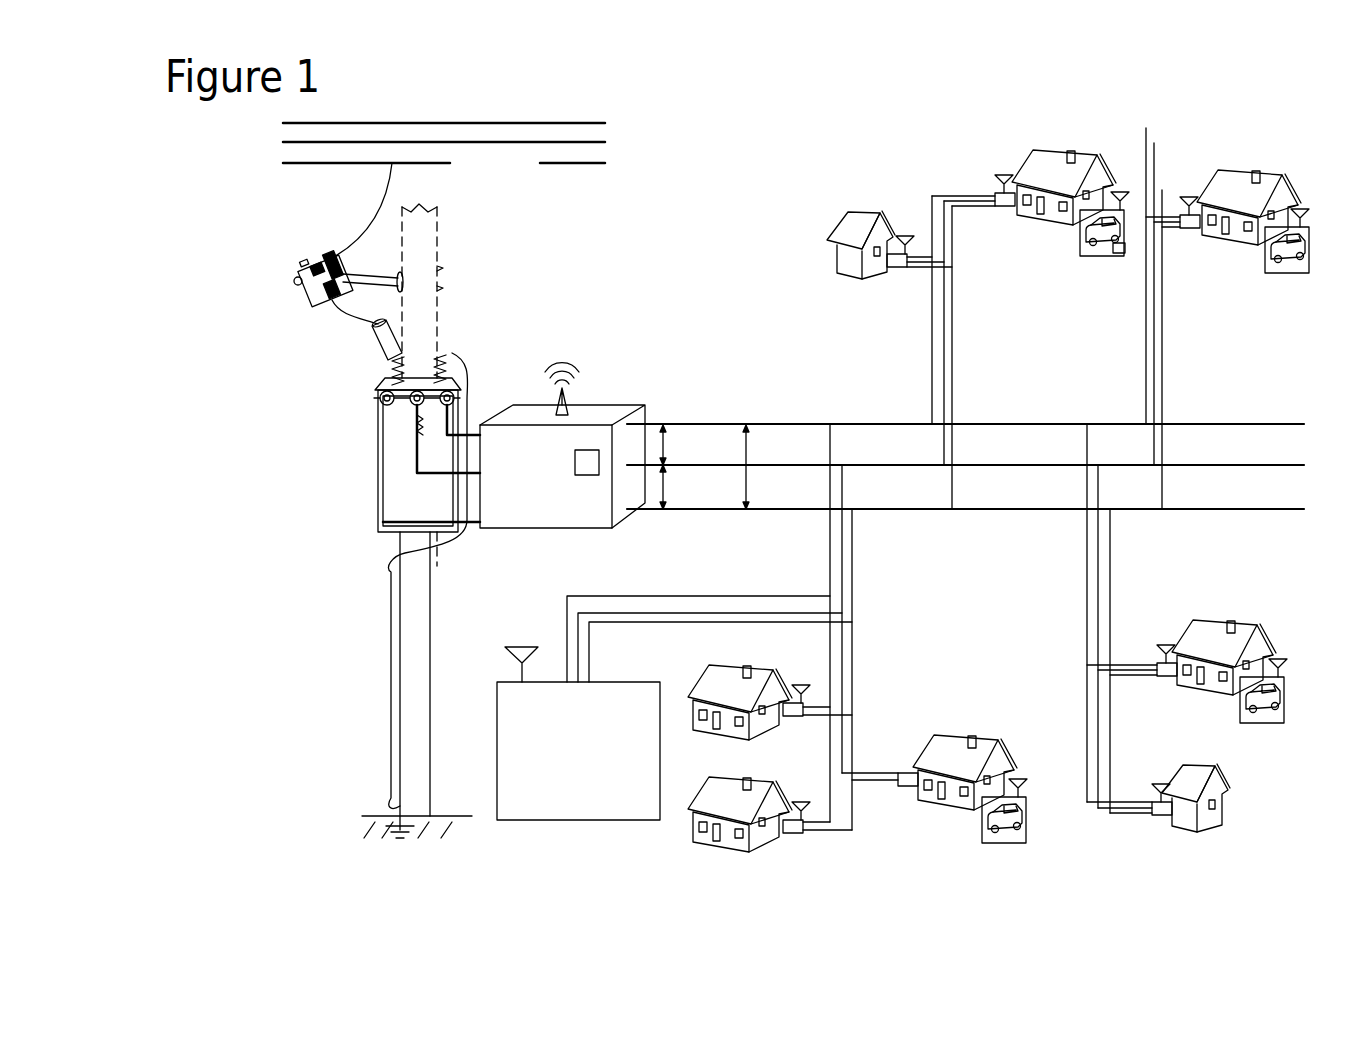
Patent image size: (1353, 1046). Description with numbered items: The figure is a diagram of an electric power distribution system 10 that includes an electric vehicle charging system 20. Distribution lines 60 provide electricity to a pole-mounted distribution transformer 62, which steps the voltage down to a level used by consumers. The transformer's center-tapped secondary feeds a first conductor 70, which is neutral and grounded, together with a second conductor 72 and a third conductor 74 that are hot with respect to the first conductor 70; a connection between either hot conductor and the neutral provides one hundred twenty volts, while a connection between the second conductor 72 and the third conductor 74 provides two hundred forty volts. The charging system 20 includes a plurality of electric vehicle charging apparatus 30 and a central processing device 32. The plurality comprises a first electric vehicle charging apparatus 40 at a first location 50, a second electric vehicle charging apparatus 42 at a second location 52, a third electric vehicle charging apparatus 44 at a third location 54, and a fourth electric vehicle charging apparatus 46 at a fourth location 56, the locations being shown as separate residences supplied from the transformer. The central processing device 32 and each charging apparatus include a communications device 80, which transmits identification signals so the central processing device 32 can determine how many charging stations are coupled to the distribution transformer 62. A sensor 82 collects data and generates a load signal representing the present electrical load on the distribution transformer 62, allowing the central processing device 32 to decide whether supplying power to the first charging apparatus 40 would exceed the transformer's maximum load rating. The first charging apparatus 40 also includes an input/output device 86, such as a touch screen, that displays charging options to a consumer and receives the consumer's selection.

The electric power distribution system 10 is at (633, 250).
The electric vehicle charging system 20 is at (607, 439).
The plurality of electric vehicle charging apparatus 30 is at (910, 485).
The central processing device 32 is at (562, 465).
The first electric vehicle charging apparatus 40 is at (1082, 261).
The second electric vehicle charging apparatus 42 is at (1265, 258).
The third electric vehicle charging apparatus 44 is at (1240, 706).
The fourth electric vehicle charging apparatus 46 is at (982, 820).
The first location 50 is at (1048, 150).
The second location 52 is at (1233, 170).
The third location 54 is at (1209, 622).
The fourth location 56 is at (949, 732).
The distribution lines 60 is at (606, 106).
The distribution transformer 62 is at (378, 432).
The first conductor 70 is at (965, 471).
The second conductor 72 is at (791, 424).
The third conductor 74 is at (965, 534).
The communications device 80 is at (552, 388).
The sensor 82 is at (590, 475).
The input/output device 86 is at (1120, 253).